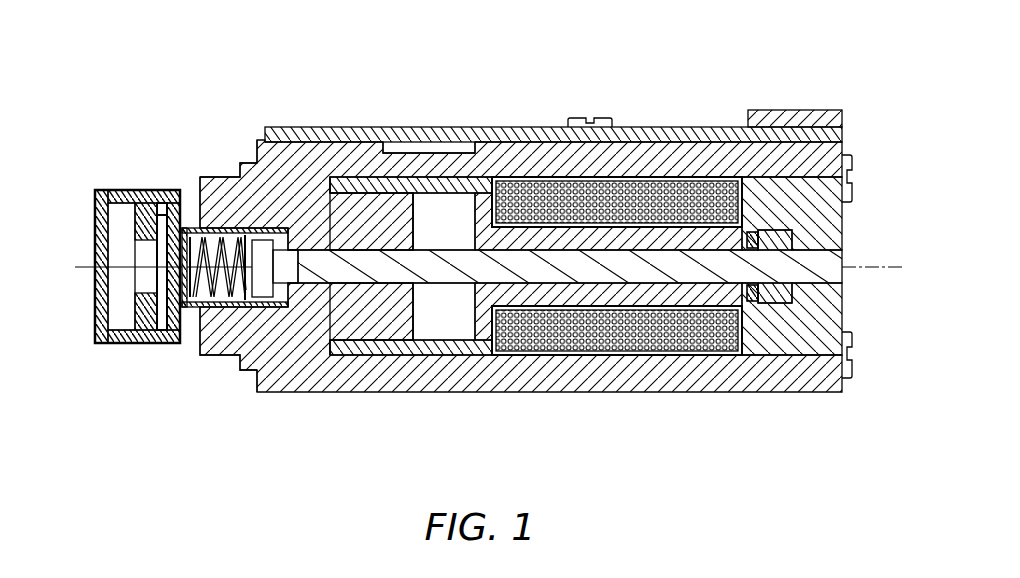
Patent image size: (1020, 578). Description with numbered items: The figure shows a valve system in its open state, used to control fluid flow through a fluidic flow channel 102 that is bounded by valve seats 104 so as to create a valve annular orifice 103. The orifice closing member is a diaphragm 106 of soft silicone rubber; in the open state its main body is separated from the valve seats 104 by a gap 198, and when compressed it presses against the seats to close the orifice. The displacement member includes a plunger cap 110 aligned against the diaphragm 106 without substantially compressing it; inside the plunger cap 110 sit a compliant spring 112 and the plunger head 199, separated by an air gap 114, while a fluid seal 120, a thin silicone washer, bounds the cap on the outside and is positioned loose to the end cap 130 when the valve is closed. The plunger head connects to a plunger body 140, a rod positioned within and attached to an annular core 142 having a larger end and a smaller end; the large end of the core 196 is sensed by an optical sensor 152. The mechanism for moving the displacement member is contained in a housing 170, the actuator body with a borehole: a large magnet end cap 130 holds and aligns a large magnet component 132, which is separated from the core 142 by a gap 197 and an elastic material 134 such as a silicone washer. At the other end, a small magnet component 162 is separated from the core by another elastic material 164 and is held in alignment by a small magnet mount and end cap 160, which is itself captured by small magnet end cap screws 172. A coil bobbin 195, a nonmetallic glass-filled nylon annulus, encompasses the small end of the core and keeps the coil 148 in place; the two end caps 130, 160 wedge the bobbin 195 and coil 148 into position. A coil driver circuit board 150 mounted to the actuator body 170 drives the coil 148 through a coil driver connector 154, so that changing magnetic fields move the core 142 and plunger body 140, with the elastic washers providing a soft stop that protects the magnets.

The fluidic flow channel 102 is at (90, 266).
The valve annular orifice 103 is at (128, 270).
The valve seats 104 is at (133, 262).
The diaphragm 106 is at (172, 230).
The plunger cap 110 is at (162, 335).
The spring 112 is at (232, 318).
The air gap 114 is at (245, 300).
The fluid seal 120 is at (280, 330).
The large magnet end cap 130 is at (228, 183).
The large magnet component 132 is at (345, 245).
The elastic material 134 is at (403, 245).
The plunger body 140 is at (537, 275).
The core 142 is at (560, 232).
The coil 148 is at (617, 376).
The coil driver circuit board 150 is at (330, 128).
The optical sensor 152 is at (430, 148).
The coil driver connector 154 is at (760, 112).
The small magnet mount and end cap 160 is at (840, 235).
The small magnet component 162 is at (768, 300).
The elastic material 164 is at (752, 248).
The housing 170 is at (640, 142).
The small magnet end cap screws 172 is at (852, 168).
The coil bobbin 195 is at (668, 330).
The large end of the core 196 is at (460, 245).
The gap 197 is at (457, 205).
The gap 198 is at (162, 218).
The plunger head 199 is at (262, 240).